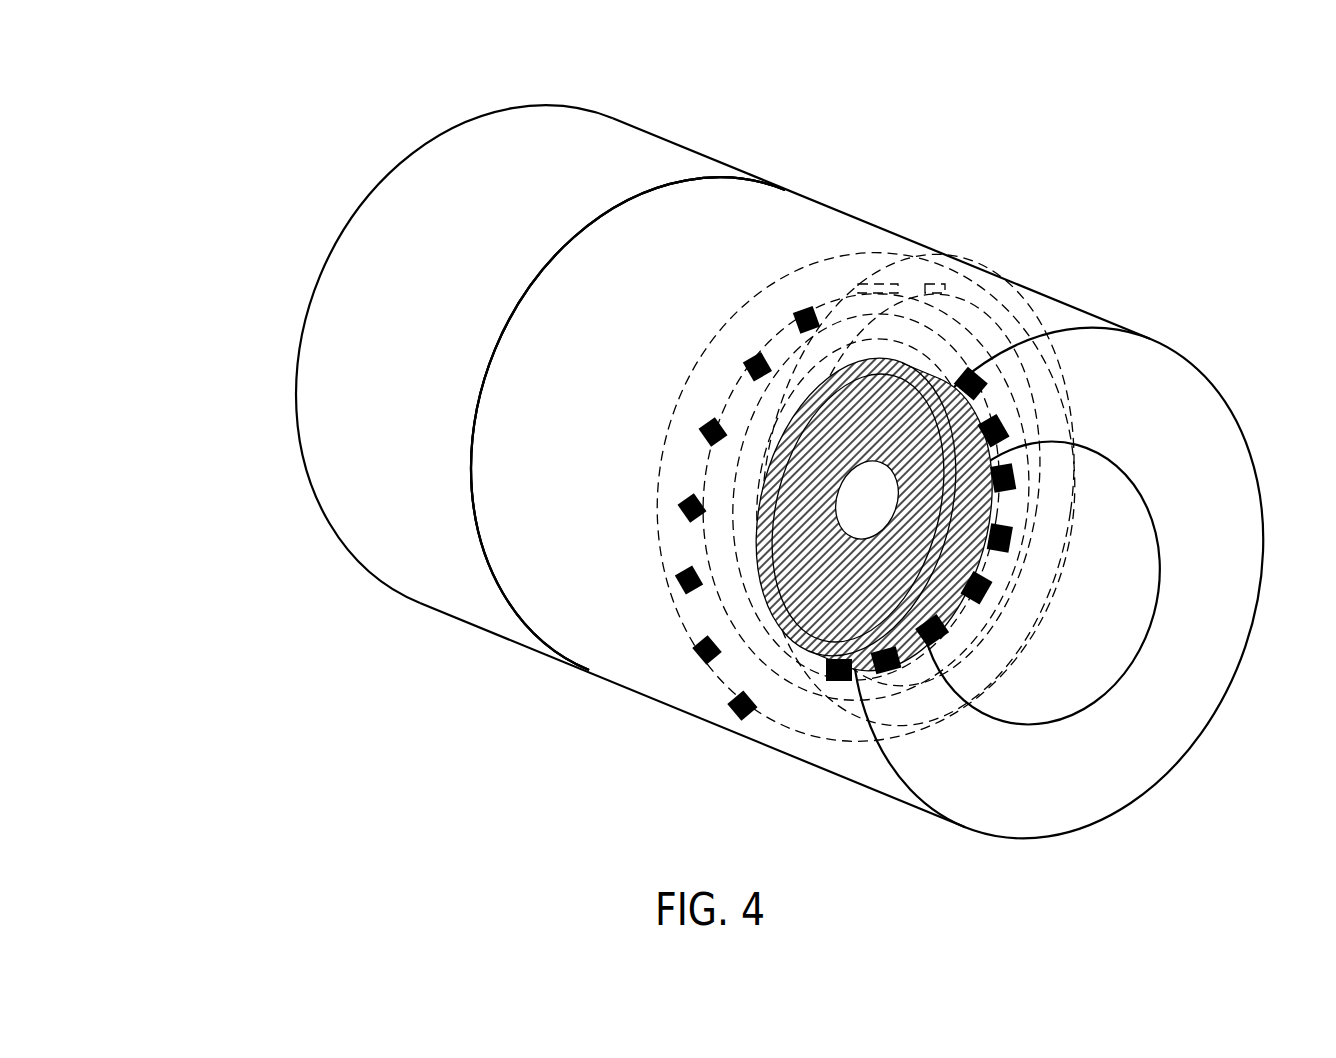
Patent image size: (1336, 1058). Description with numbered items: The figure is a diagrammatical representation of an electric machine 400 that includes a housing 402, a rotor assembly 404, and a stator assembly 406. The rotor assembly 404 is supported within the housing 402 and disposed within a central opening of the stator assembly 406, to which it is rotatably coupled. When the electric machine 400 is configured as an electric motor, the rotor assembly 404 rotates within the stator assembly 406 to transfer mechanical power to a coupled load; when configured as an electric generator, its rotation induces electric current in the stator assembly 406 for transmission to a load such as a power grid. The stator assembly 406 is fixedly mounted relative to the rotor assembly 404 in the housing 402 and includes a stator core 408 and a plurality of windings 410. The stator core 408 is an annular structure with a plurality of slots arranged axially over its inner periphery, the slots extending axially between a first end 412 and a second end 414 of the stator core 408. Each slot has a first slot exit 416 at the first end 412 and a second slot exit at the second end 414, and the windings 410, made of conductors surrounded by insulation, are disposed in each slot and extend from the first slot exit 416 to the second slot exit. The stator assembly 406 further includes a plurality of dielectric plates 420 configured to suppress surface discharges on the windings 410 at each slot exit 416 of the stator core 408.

The electric machine 400 is at (248, 78).
The housing 402 is at (308, 295).
The rotor assembly 404 is at (992, 509).
The stator assembly 406 is at (512, 380).
The stator core 408 is at (482, 487).
The windings 410 is at (763, 690).
The first end 412 is at (738, 348).
The second end 414 is at (590, 222).
The first slot exit 416 is at (708, 437).
The dielectric plate 420 is at (703, 650).